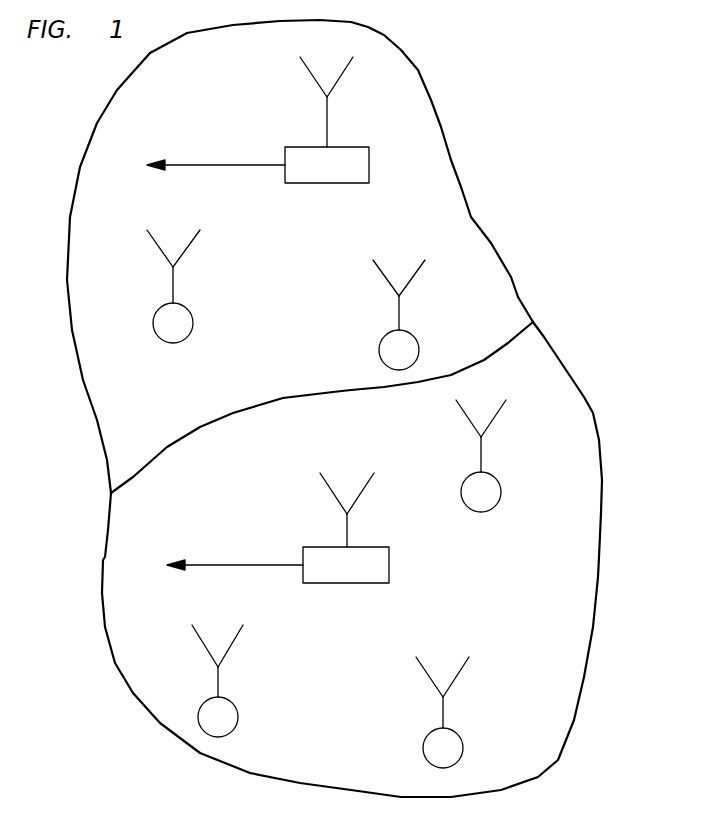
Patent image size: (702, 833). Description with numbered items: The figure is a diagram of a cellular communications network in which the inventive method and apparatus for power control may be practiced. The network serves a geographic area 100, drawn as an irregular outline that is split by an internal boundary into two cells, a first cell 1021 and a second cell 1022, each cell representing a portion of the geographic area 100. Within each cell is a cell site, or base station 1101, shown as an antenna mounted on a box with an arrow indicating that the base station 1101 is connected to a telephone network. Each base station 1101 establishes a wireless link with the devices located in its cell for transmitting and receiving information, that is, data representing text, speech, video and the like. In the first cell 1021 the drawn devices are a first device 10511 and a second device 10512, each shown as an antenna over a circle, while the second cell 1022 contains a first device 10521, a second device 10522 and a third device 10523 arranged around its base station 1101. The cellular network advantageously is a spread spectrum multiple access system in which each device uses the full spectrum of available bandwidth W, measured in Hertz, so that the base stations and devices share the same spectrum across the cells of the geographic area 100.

The geographic area 100 is at (616, 103).
The cell 1021 is at (469, 217).
The cell 1022 is at (588, 407).
The cell site 1101 is at (358, 147).
The device 10512 is at (191, 314).
The device 10511 is at (416, 340).
The device 10523 is at (498, 482).
The device 10521 is at (234, 705).
The device 10522 is at (459, 737).